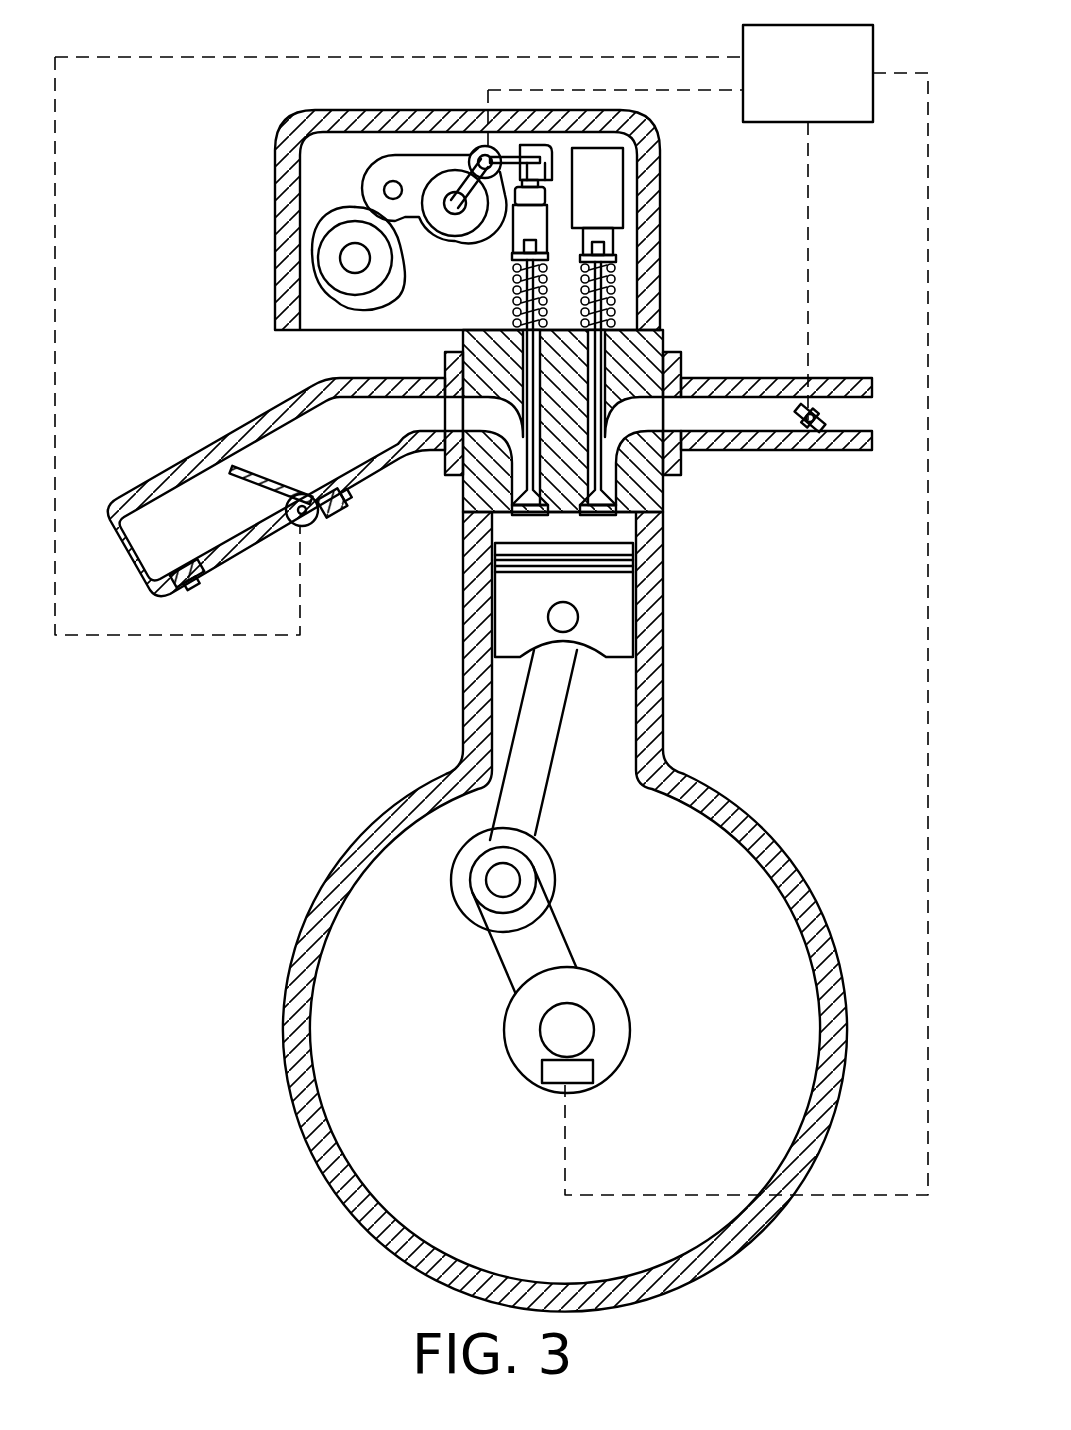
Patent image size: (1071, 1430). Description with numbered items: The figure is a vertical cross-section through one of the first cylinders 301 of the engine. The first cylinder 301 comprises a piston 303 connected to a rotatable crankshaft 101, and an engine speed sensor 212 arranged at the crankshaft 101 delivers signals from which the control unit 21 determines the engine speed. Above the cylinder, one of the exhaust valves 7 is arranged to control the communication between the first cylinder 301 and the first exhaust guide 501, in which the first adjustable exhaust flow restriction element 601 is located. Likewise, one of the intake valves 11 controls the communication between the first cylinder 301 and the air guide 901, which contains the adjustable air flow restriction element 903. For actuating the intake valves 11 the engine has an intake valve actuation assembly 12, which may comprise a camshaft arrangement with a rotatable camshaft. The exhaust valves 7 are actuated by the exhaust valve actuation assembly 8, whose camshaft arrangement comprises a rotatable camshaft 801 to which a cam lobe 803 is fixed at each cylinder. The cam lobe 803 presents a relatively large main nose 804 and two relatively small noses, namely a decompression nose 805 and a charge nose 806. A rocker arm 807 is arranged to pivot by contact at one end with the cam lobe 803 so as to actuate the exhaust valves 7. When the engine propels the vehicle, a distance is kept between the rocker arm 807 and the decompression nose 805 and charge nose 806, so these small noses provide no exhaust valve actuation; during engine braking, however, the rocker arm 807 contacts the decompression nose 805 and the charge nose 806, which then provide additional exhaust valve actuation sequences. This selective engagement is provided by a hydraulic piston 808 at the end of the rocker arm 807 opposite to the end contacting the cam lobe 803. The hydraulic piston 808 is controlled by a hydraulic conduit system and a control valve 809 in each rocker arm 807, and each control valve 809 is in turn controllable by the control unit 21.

The exhaust valve actuation assembly 8 is at (262, 98).
The control unit 21 is at (824, 90).
The intake valve actuation assembly 12 is at (628, 197).
The exhaust valve 7 is at (535, 360).
The intake valve 11 is at (603, 385).
The first exhaust guide 501 is at (172, 462).
The first adjustable exhaust flow restriction element 601 is at (258, 487).
The air guide 901 is at (737, 450).
The adjustable air flow restriction element 903 is at (812, 428).
The piston 303 is at (607, 614).
The first cylinder 301 is at (622, 720).
The crankshaft 101 is at (538, 1028).
The engine speed sensor 212 is at (545, 1073).
The camshaft 801 is at (352, 258).
The cam lobe 803 is at (330, 248).
The main nose 804 is at (373, 305).
The decompression nose 805 is at (372, 210).
The charge nose 806 is at (322, 225).
The rocker arm 807 is at (433, 157).
The hydraulic piston 808 is at (548, 145).
The control valve 809 is at (467, 148).